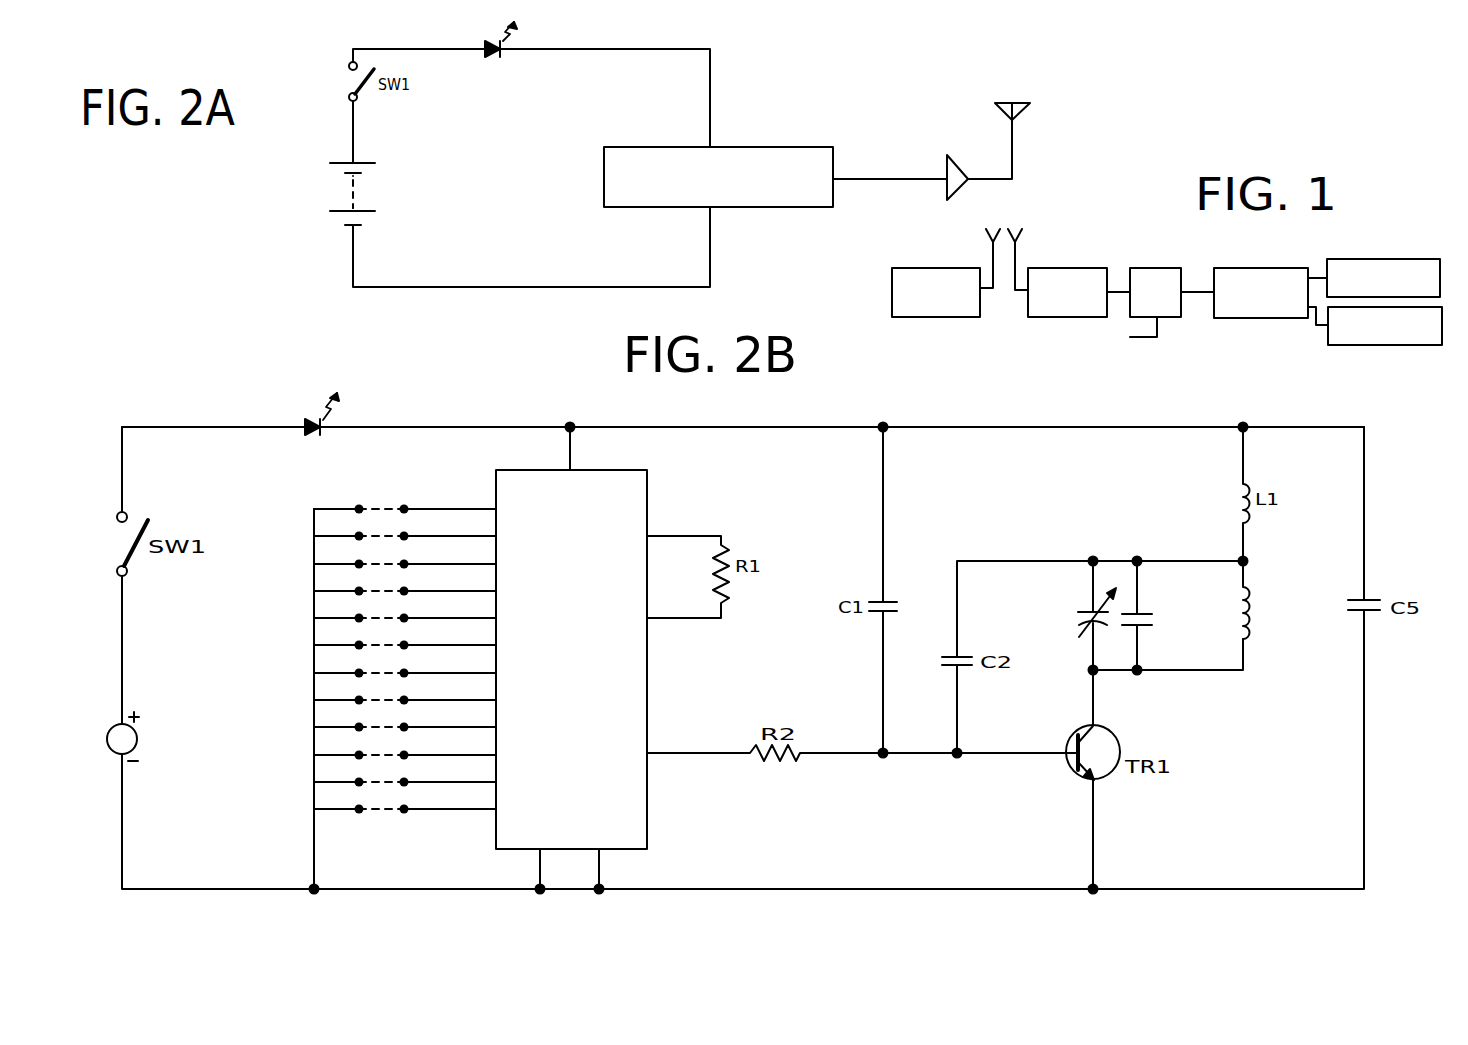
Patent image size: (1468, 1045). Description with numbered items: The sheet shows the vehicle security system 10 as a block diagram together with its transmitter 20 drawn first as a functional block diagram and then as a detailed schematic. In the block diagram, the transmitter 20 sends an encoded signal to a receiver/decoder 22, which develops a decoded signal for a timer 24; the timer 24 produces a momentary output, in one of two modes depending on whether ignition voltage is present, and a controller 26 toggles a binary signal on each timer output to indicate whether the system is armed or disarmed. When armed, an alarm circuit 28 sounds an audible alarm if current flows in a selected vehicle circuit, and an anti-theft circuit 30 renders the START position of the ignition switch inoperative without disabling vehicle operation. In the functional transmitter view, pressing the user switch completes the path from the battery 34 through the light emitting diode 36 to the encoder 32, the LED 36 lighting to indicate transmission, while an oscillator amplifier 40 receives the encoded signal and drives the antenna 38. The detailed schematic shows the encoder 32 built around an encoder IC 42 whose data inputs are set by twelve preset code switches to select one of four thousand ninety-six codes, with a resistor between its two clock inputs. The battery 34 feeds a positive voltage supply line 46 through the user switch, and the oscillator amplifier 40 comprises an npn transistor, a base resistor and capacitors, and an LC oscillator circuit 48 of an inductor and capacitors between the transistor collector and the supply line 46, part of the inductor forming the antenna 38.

In FIG. 1, the vehicle security system 10 is at (1100, 220).
In FIG. 1, the transmitter 20 is at (925, 260).
In FIG. 1, the receiver/decoder 22 is at (1032, 325).
In FIG. 1, the timer 24 is at (1160, 268).
In FIG. 1, the controller 26 is at (1285, 258).
In FIG. 1, the alarm circuit 28 is at (1378, 259).
In FIG. 1, the anti-theft circuit 30 is at (1375, 345).
In FIG. 2A, the encoder 32 is at (786, 147).
In FIG. 2B, the encoder 32 is at (470, 472).
In FIG. 2A, the battery 34 is at (360, 163).
In FIG. 2B, the battery 34 is at (138, 738).
In FIG. 2A, the light emitting diode 36 is at (493, 44).
In FIG. 2B, the light emitting diode 36 is at (302, 425).
In FIG. 2A, the antenna 38 is at (1022, 102).
In FIG. 2A, the oscillator amplifier 40 is at (947, 155).
In FIG. 2B, the encoder IC 42 is at (647, 485).
In FIG. 2B, the positive voltage supply line 46 is at (720, 427).
In FIG. 2B, the LC oscillator circuit 48 is at (1112, 548).